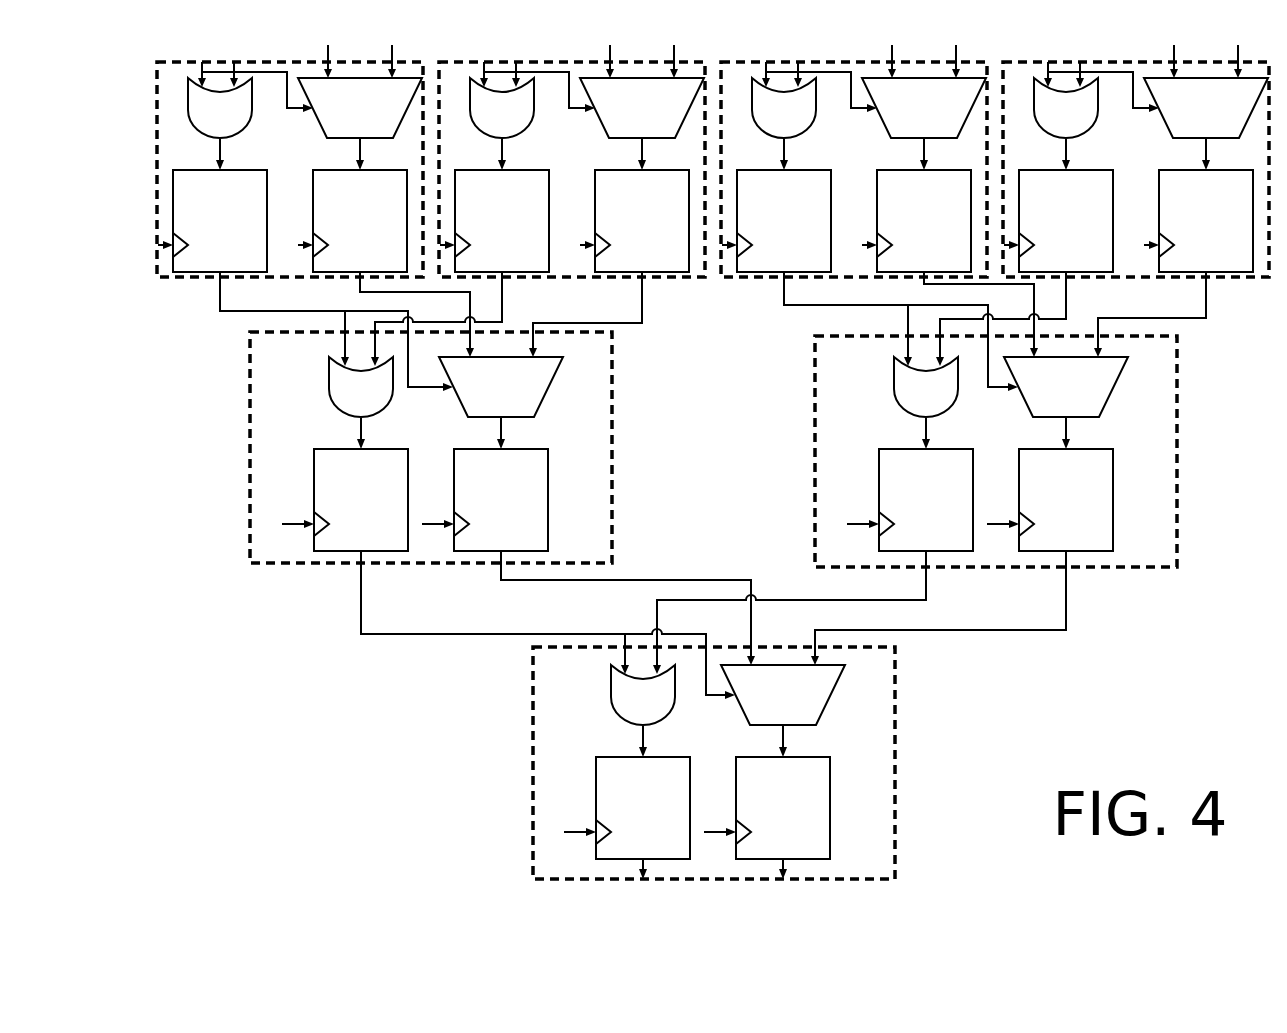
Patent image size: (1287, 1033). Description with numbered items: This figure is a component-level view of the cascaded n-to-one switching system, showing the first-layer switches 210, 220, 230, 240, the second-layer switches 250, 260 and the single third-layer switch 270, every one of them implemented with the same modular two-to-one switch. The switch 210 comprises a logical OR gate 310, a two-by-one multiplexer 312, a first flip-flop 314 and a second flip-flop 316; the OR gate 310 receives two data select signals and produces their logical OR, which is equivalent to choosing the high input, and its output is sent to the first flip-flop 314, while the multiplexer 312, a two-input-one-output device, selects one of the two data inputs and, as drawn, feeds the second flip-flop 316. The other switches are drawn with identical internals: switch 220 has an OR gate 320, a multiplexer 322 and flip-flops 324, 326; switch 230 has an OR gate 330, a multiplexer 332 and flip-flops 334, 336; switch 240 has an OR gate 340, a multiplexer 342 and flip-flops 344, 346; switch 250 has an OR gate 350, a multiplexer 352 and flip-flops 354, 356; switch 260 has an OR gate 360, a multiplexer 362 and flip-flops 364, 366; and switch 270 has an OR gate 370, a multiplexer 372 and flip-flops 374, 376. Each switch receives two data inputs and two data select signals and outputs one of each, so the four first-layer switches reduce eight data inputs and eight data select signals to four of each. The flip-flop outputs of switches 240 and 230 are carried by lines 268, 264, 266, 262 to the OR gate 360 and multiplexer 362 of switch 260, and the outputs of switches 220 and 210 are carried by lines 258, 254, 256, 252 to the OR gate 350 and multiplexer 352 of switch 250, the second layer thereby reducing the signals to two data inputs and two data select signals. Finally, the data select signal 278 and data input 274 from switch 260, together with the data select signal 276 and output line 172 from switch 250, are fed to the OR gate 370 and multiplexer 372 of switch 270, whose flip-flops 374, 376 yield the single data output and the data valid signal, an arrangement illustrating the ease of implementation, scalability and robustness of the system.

The output signal line 172 is at (1040, 631).
The 2-to-1 switch 210 is at (1129, 62).
The 2-to-1 switch 220 is at (847, 62).
The 2-to-1 switch 230 is at (565, 62).
The 2-to-1 switch 240 is at (283, 62).
The 2-to-1 switch 250 is at (1002, 568).
The 2-to-1 switch 260 is at (437, 564).
The 2-to-1 switch 270 is at (898, 677).
The signal line 252 is at (1196, 319).
The signal line 254 is at (920, 285).
The signal line 256 is at (1067, 288).
The signal line 258 is at (797, 306).
The signal line 262 is at (630, 324).
The signal line 264 is at (360, 286).
The signal line 266 is at (502, 292).
The signal line 268 is at (235, 312).
The data input 274 is at (585, 581).
The data select signal 276 is at (832, 601).
The data select signal 278 is at (470, 635).
The logical OR gate 310 is at (1098, 98).
The 2x1 multiplexer 312 is at (1164, 116).
The first flip-flop 314 is at (1059, 167).
The second flip-flop 316 is at (1213, 166).
The OR gate 320 is at (816, 98).
The 2x1 multiplexer 322 is at (882, 116).
The D flip-flop 324 is at (777, 167).
The D flip-flop 326 is at (931, 166).
The OR gate 330 is at (534, 98).
The 2x1 multiplexer 332 is at (600, 116).
The D flip-flop 334 is at (495, 167).
The D flip-flop 336 is at (649, 166).
The OR gate 340 is at (252, 98).
The 2x1 multiplexer 342 is at (318, 116).
The D flip-flop 344 is at (213, 167).
The D flip-flop 346 is at (367, 166).
The OR gate 350 is at (958, 377).
The 2x1 multiplexer 352 is at (1024, 395).
The D flip-flop 354 is at (919, 446).
The D flip-flop 356 is at (1073, 445).
The OR gate 360 is at (393, 377).
The 2x1 multiplexer 362 is at (459, 395).
The D flip-flop 364 is at (354, 446).
The D flip-flop 366 is at (508, 445).
The OR gate 370 is at (675, 685).
The 2x1 multiplexer 372 is at (741, 703).
The D flip-flop 374 is at (636, 754).
The D flip-flop 376 is at (790, 753).